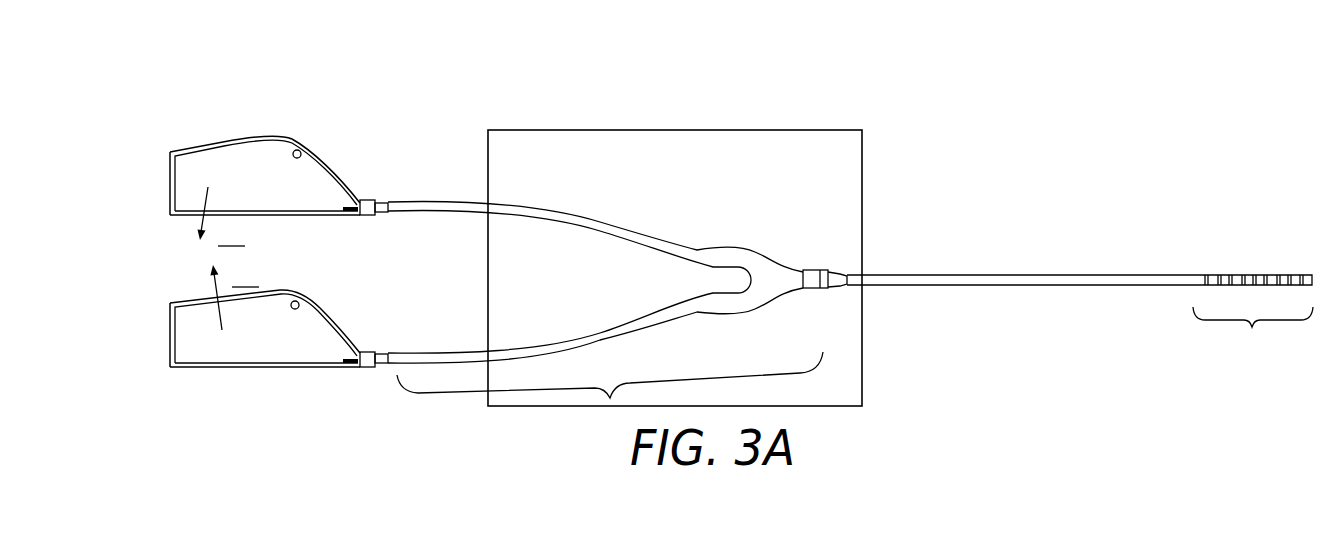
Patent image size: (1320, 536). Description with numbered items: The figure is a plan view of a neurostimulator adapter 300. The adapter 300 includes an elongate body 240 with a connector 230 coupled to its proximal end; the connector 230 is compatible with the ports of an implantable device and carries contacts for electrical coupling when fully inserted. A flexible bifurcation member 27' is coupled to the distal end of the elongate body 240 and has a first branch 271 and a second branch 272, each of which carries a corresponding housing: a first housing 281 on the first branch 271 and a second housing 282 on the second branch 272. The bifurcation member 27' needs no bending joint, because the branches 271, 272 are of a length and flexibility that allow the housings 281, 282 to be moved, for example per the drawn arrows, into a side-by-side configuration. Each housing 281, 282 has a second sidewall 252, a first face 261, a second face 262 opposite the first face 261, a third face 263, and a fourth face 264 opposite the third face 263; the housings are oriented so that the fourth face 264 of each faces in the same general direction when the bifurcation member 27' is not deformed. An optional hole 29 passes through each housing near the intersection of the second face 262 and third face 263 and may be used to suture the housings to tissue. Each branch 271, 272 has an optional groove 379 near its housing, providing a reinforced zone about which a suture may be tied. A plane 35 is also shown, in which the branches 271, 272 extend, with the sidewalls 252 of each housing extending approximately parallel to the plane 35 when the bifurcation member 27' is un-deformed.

The neurostimulator adapter 300 is at (972, 145).
The plane 35 is at (793, 140).
The second sidewall 252 is at (267, 188).
The third face 263 is at (225, 142).
The second face 262 is at (338, 168).
The fourth face 264 is at (277, 217).
The first face 261 is at (168, 185).
The hole 29 is at (300, 149).
The first housing 281 is at (155, 155).
The second housing 282 is at (170, 376).
The groove 379 is at (383, 198).
The first branch 271 is at (526, 205).
The second branch 272 is at (657, 325).
The elongate body 240 is at (985, 282).
The connector 230 is at (1253, 316).
The flexible bifurcation member 27' is at (610, 408).